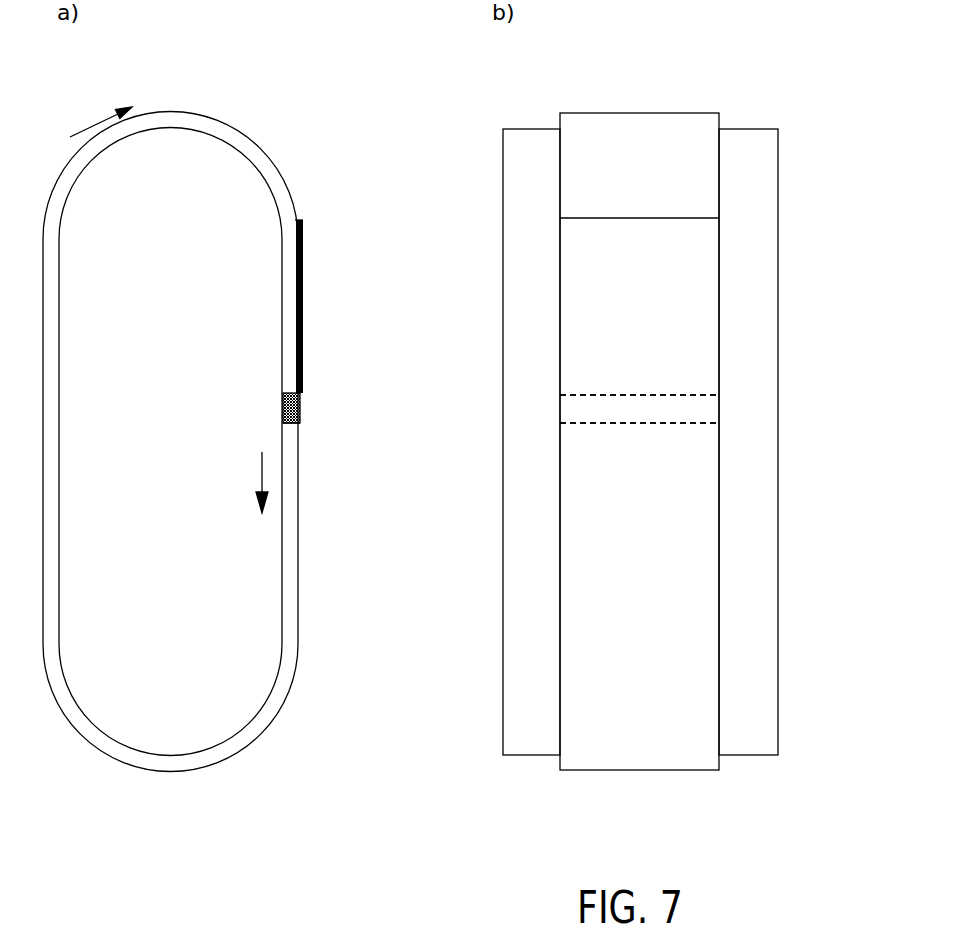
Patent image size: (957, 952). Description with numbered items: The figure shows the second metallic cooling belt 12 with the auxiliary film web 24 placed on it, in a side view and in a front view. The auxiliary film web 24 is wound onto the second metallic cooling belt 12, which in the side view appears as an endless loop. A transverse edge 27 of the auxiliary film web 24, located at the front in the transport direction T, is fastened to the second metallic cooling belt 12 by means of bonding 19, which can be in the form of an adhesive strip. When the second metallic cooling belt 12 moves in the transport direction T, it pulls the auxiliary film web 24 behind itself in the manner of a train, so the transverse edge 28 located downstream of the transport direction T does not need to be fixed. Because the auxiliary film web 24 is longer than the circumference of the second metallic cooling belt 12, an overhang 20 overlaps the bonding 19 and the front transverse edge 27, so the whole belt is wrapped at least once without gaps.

The second metallic cooling belt 12 is at (235, 148).
The auxiliary film web 24 is at (253, 143).
The overhang 20 is at (302, 262).
The transverse edge 28 is at (300, 220).
The bonding 19 is at (283, 410).
The transverse edge 27 is at (300, 423).
The transport direction T is at (262, 478).